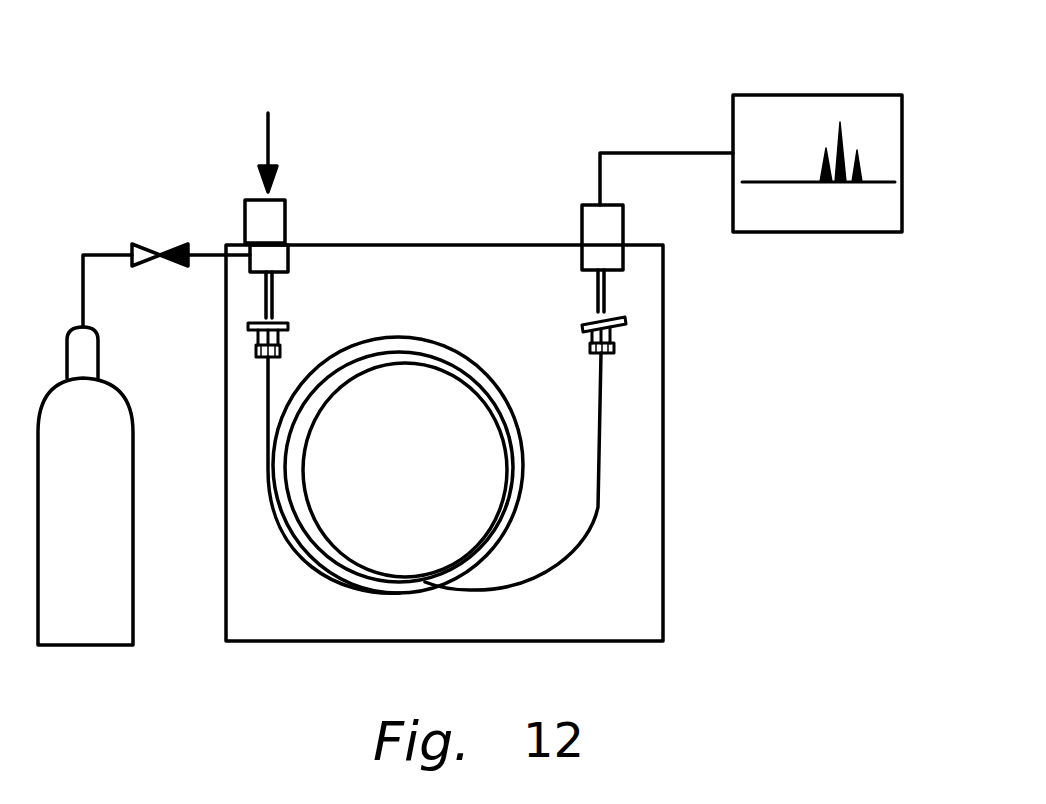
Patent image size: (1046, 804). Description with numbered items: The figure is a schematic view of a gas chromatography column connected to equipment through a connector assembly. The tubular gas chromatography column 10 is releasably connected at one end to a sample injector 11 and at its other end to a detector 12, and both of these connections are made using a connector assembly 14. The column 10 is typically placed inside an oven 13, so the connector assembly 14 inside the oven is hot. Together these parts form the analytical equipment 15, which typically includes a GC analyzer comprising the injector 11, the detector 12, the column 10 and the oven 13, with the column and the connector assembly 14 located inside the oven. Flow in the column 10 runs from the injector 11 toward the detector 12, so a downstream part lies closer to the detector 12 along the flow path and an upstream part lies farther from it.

The gas chromatography column 10 is at (355, 595).
The sample injector 11 is at (287, 257).
The detector 12 is at (580, 220).
The oven 13 is at (665, 475).
The connector assembly 14 is at (310, 300).
The analytical equipment 15 is at (545, 115).